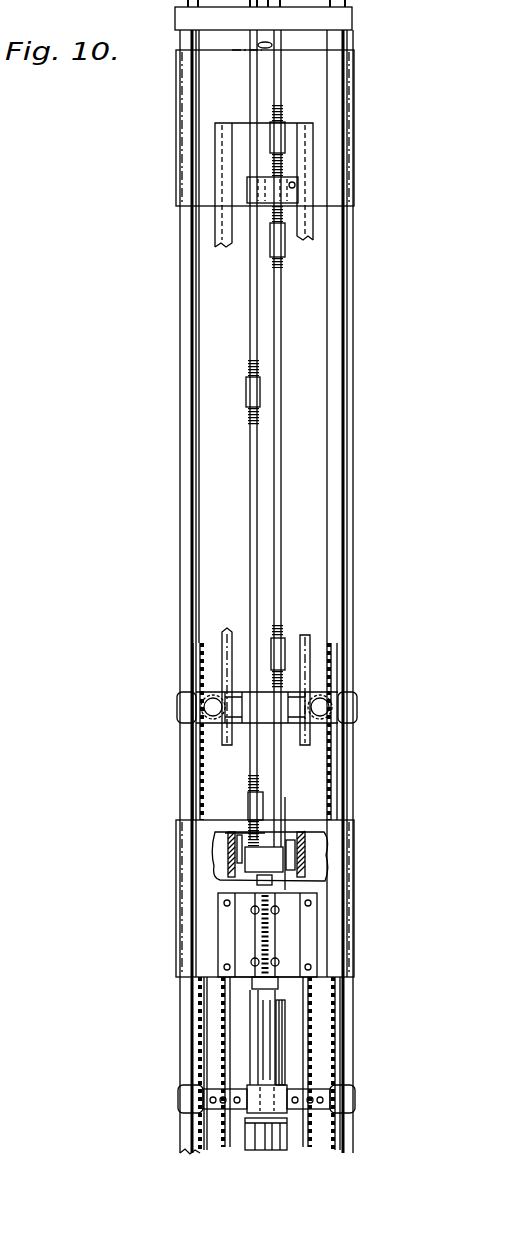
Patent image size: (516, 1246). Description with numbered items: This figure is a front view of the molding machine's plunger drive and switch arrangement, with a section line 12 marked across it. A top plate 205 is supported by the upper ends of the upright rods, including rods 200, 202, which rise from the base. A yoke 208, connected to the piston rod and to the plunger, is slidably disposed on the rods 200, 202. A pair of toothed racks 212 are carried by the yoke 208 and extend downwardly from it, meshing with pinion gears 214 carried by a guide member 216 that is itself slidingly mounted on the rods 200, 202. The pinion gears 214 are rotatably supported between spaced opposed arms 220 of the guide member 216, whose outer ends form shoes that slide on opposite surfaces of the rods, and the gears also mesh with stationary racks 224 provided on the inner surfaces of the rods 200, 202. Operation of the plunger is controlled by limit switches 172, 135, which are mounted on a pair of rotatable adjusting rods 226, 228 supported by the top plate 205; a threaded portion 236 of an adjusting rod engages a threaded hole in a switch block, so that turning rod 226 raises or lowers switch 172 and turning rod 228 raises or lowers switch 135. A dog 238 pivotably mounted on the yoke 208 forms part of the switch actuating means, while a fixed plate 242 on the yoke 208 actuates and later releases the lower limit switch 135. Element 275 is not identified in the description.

The top plate 205 is at (175, 18).
The yoke 208 is at (176, 103).
The rod 200 is at (180, 781).
The rod 202 is at (350, 781).
The rod 228 is at (250, 505).
The rod 226 is at (282, 508).
The threaded portion 236 is at (285, 217).
The limit switch 172 is at (250, 204).
The racks 212 is at (243, 600).
The pinion gears 214 is at (209, 697).
The guide member 216 is at (243, 727).
The stationary racks 224 is at (320, 755).
The fixed plate 242 is at (248, 836).
The section line 12- 12 is at (318, 808).
The dog 238 is at (300, 865).
The limit switch 135 is at (278, 866).
The arms 220 is at (178, 1098).
The cylinder 275 is at (268, 1147).